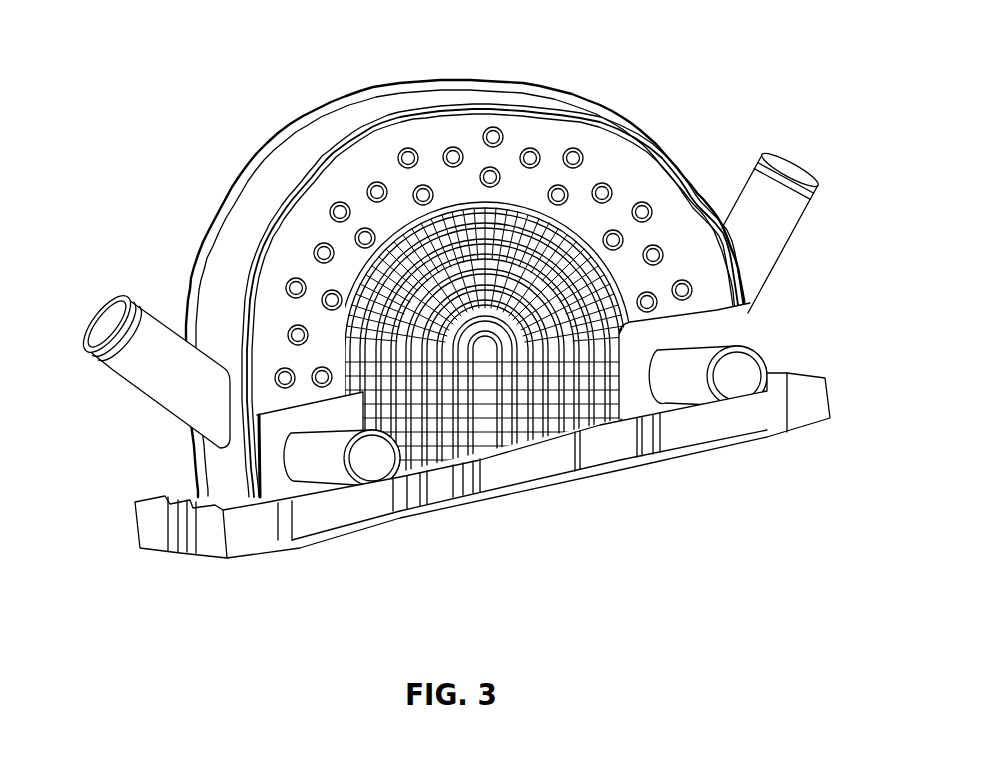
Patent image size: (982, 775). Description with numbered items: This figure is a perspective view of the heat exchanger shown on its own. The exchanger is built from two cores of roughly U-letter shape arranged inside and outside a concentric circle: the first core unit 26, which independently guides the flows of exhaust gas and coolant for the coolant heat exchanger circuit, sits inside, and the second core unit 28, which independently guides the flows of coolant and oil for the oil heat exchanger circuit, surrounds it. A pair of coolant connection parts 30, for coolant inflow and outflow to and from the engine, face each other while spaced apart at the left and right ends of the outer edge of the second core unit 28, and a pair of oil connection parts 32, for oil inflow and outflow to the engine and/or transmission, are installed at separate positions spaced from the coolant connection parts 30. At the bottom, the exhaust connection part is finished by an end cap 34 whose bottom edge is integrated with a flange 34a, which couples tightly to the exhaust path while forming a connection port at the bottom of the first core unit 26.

The first core unit 26 is at (543, 263).
The second core unit 28 is at (543, 124).
The coolant connection part 30 is at (150, 367).
The oil connection part 32 is at (383, 463).
The end cap 34 is at (414, 518).
The flange 34a is at (238, 525).